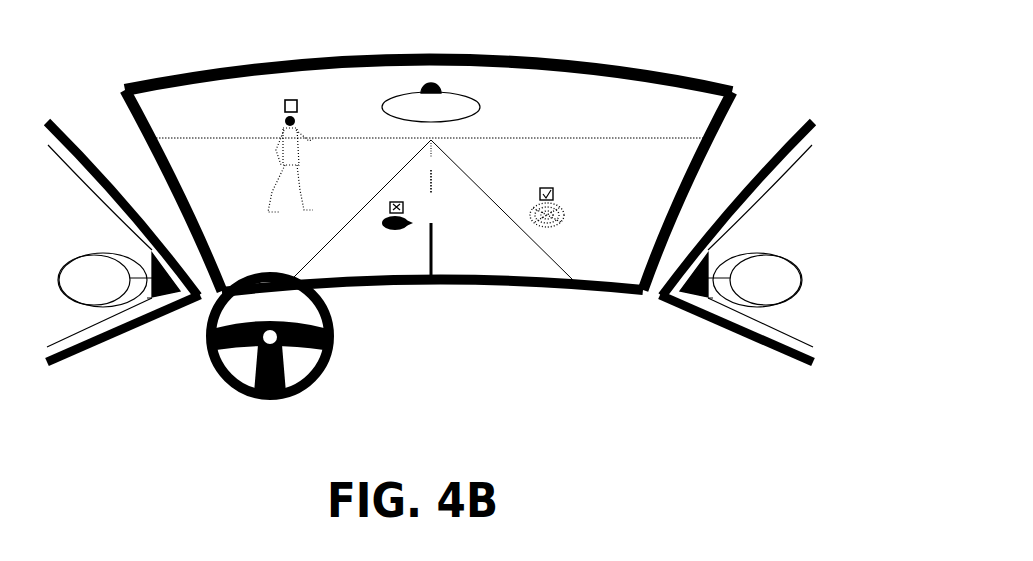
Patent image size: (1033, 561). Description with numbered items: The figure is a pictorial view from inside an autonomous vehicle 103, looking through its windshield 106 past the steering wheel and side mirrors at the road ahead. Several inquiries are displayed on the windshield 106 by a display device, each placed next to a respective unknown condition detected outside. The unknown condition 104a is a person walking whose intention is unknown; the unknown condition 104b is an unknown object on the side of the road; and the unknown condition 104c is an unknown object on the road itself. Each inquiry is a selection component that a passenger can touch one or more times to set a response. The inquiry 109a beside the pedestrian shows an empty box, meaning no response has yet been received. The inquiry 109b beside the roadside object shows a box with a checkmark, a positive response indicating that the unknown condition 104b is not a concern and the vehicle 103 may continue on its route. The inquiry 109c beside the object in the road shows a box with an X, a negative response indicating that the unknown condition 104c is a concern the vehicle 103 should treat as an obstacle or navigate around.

The vehicle 103 is at (652, 395).
The windshield 106 is at (555, 58).
The unknown condition 104a is at (263, 141).
The unknown condition 104b is at (541, 233).
The unknown condition 104c is at (414, 228).
The inquiry 109a is at (302, 102).
The inquiry 109b is at (556, 190).
The inquiry 109c is at (378, 214).